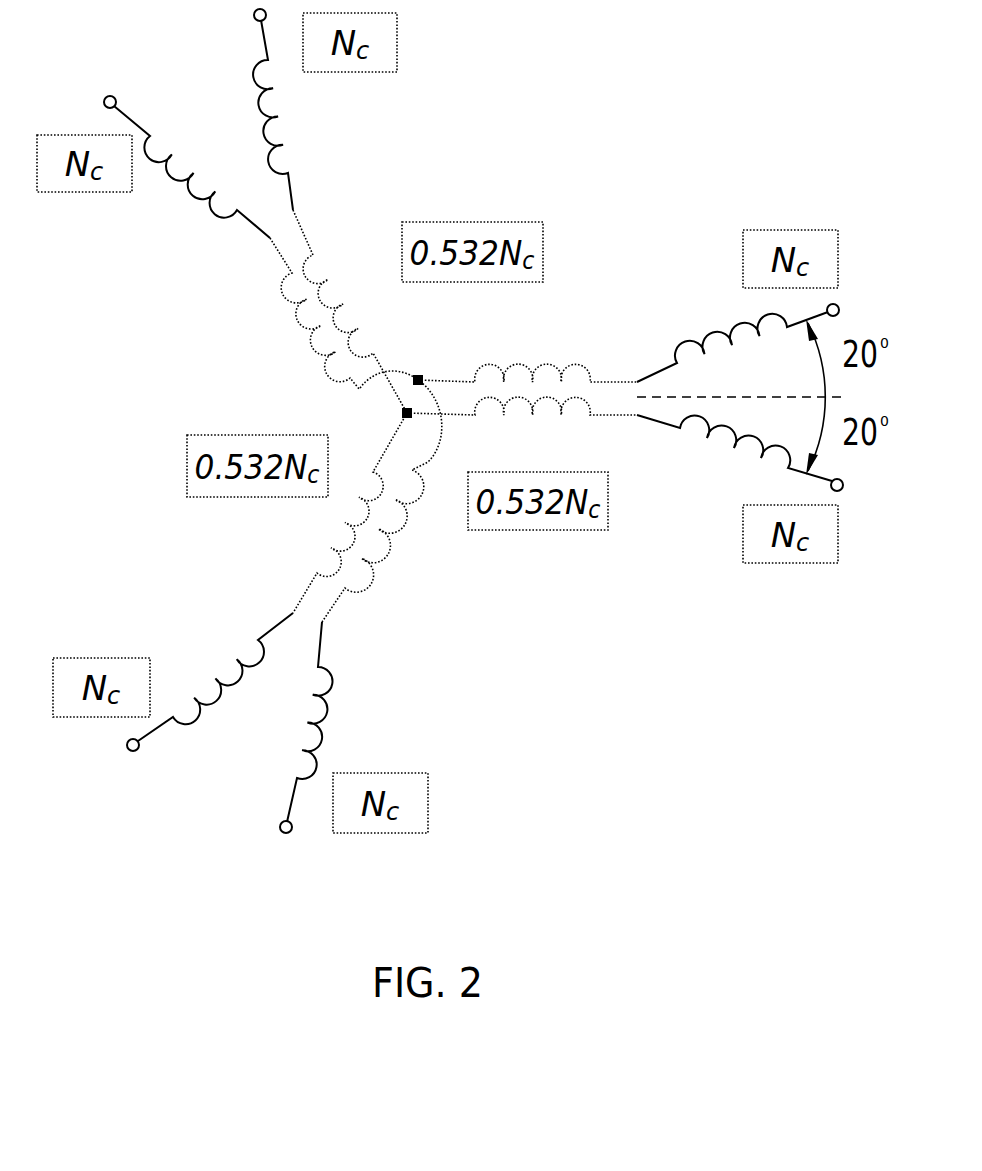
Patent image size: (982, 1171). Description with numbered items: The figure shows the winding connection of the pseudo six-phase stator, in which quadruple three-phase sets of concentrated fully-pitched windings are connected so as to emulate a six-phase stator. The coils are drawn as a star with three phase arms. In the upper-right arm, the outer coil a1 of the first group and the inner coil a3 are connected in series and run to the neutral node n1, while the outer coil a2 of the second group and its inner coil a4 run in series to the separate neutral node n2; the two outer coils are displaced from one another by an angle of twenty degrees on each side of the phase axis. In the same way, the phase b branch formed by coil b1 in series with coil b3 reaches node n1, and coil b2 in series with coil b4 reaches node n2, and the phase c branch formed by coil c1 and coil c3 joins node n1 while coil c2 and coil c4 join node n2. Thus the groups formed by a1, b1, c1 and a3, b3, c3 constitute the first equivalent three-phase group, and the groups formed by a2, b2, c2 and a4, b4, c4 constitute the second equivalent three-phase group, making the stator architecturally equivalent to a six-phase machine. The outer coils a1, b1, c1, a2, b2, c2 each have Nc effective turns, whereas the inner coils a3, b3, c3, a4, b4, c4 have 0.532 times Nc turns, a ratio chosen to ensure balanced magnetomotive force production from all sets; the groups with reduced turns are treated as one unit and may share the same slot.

The phase a coil of winding group abc1 a1 is at (732, 329).
The phase a coil of winding group abc2 a2 is at (734, 455).
The phase a coil of winding group abc3 a3 is at (527, 348).
The phase a coil of winding group abc4 a4 is at (522, 432).
The phase b coil of winding group abc1 b1 is at (324, 722).
The phase b coil of winding group abc2 b2 is at (215, 677).
The phase b coil of winding group abc3 b3 is at (382, 496).
The phase b coil of winding group abc4 b4 is at (349, 513).
The phase c coil of winding group abc1 c1 is at (192, 172).
The phase c coil of winding group abc2 c2 is at (287, 115).
The phase c coil of winding group abc3 c3 is at (310, 314).
The phase c coil of winding group abc4 c4 is at (350, 311).
The neutral point of the first equivalent three-phase group n1 is at (431, 358).
The neutral point of the second equivalent three-phase group n2 is at (385, 418).